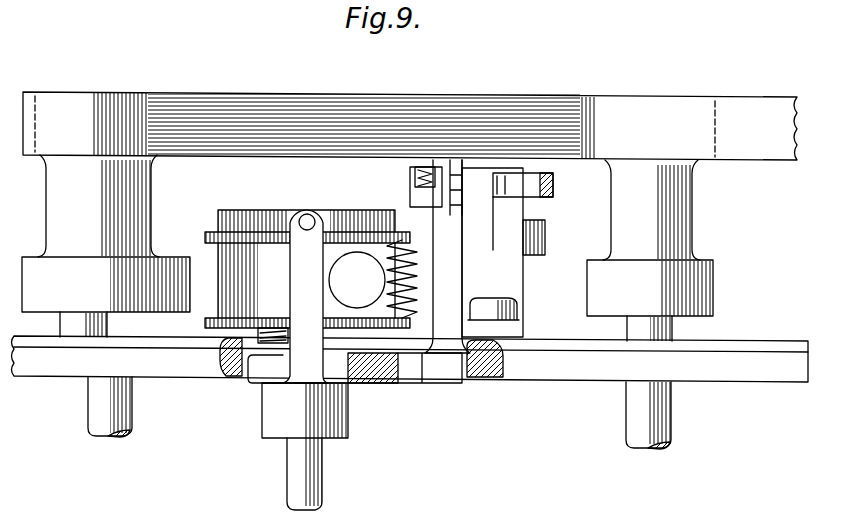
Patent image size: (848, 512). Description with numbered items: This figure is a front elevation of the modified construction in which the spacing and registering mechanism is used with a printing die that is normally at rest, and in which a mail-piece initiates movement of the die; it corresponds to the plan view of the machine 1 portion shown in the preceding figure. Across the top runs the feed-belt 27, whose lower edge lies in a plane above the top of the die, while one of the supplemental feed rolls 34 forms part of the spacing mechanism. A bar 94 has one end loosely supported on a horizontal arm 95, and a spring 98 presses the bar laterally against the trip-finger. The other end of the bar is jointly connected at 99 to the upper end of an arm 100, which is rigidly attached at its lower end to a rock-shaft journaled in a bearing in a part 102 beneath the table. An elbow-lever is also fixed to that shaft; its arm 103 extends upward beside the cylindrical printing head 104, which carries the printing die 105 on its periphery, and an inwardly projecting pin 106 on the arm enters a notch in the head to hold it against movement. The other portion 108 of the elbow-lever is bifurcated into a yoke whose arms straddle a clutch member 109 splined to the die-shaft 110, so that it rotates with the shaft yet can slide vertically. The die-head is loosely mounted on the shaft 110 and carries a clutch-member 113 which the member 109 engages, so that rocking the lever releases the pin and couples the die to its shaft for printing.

The base plate 1 is at (768, 342).
The feed-belt 27 is at (326, 95).
The supplemental feed roll 34 is at (546, 240).
The bar 94 is at (453, 166).
The horizontal arm 95 is at (410, 195).
The spring 98 is at (425, 167).
The joint connection 99 is at (466, 168).
The arm 100 is at (440, 322).
The part beneath the table 102 is at (403, 387).
The arm of the elbow-lever 103 is at (306, 264).
The cylindrical printing head 104 is at (212, 245).
The printing die 105 is at (392, 275).
The inwardly projecting pin 106 is at (308, 214).
The bifurcated portion of the elbow-lever 108 is at (263, 372).
The clutch member 109 is at (236, 375).
The die-shaft 110 is at (322, 483).
The clutch-member 113 is at (272, 326).